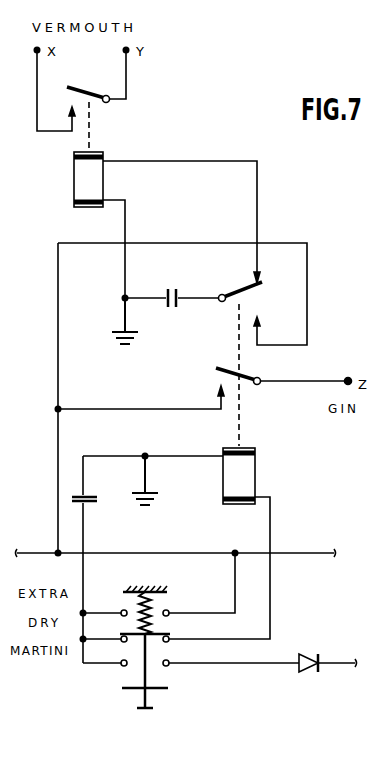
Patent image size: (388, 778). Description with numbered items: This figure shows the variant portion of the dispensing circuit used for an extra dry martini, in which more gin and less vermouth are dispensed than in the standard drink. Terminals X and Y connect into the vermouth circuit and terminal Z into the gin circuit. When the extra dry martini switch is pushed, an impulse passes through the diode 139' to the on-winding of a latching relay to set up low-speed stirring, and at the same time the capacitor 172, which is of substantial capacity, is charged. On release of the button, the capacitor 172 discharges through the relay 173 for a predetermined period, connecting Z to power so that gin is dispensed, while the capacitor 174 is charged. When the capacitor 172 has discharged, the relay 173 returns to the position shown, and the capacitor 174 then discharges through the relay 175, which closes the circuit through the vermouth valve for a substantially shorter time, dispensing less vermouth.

The relay 175 is at (76, 207).
The capacitor 174 is at (166, 296).
The relay 173 is at (236, 504).
The capacitor 172 is at (89, 504).
The diode 139' is at (312, 647).